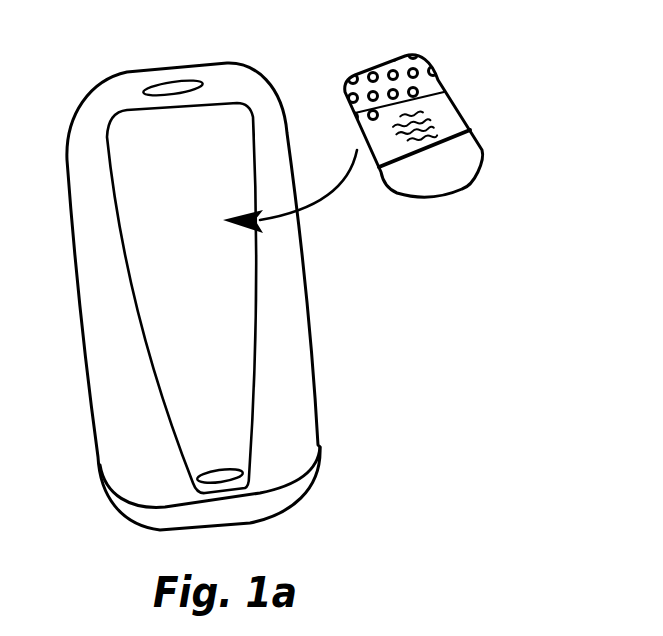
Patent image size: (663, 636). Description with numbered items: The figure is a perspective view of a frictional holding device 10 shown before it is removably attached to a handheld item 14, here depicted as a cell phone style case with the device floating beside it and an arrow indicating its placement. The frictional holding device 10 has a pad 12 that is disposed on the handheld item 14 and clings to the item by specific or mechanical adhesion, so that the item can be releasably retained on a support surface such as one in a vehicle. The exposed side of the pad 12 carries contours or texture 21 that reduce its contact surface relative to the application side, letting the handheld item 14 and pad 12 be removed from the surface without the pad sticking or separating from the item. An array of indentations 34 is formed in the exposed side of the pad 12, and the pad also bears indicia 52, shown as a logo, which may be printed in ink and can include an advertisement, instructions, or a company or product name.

The frictional holding device 10 is at (421, 149).
The pad 12 is at (484, 162).
The handheld item 14 is at (308, 342).
The contours or texture 21 is at (428, 115).
The indentations 34 is at (347, 110).
The indicia 52 is at (427, 182).